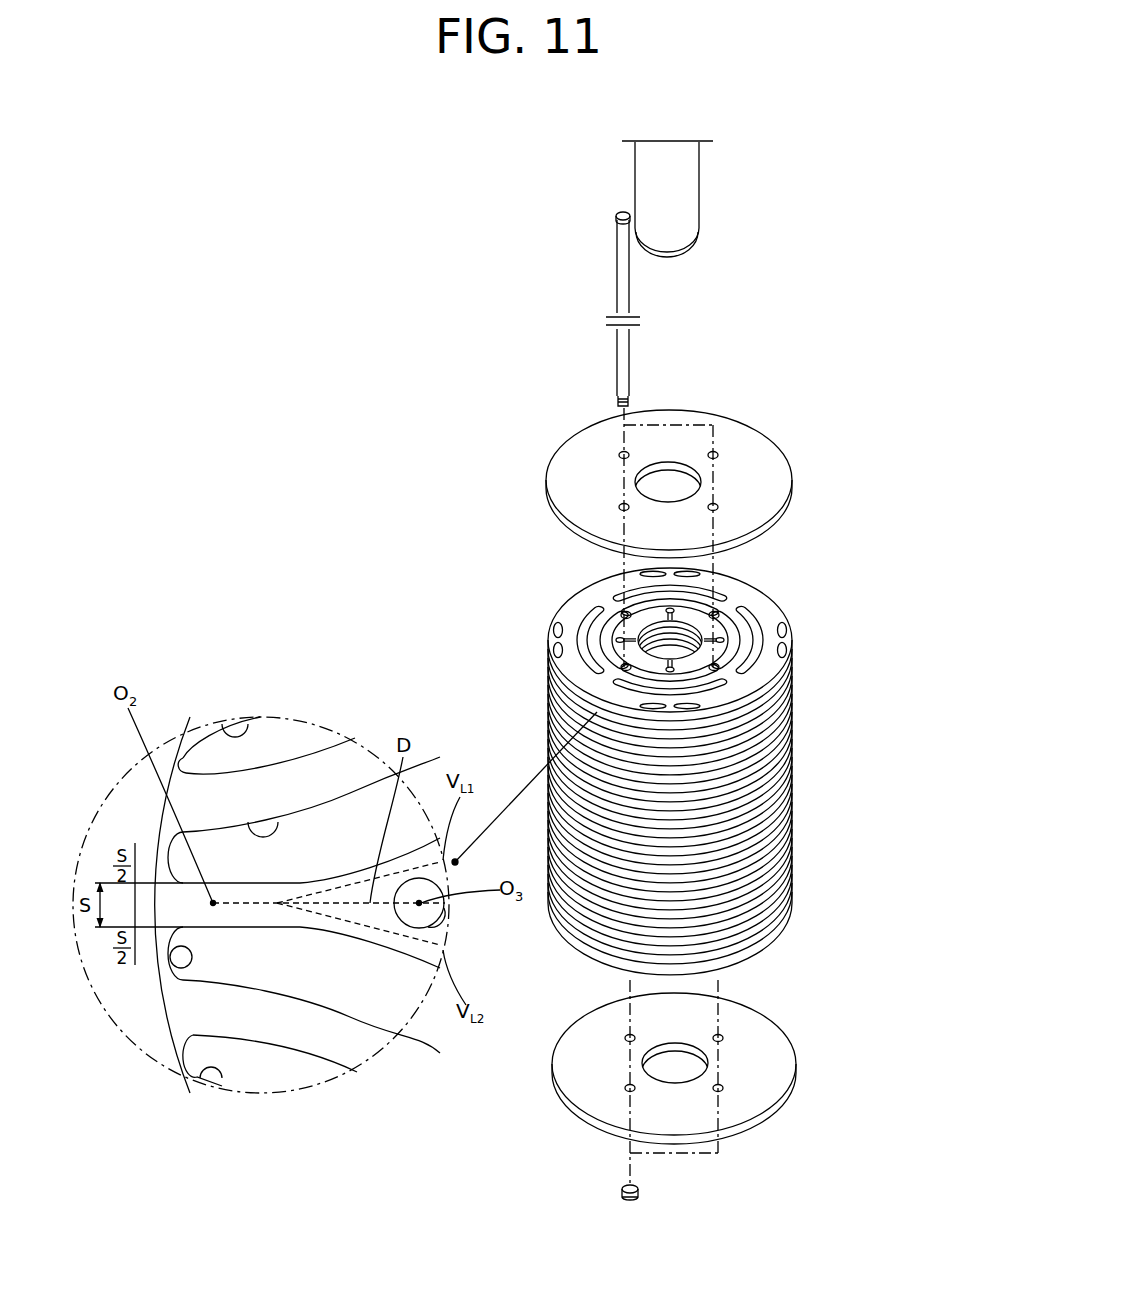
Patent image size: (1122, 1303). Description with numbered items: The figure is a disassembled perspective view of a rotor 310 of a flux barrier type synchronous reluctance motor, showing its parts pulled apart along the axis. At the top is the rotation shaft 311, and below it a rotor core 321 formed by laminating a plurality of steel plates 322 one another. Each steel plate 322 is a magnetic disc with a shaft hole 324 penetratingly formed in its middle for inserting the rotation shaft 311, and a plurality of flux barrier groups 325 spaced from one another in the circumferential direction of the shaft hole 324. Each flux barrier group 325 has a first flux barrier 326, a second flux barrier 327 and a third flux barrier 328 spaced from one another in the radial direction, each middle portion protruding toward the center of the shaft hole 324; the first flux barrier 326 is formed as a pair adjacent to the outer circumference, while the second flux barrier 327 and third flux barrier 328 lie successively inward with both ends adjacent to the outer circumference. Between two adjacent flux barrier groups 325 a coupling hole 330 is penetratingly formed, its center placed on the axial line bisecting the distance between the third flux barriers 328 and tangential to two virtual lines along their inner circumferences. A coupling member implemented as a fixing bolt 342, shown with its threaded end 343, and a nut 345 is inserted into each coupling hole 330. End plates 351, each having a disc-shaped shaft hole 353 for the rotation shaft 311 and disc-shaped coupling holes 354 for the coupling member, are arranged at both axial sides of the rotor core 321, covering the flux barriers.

The rotor 310 is at (470, 305).
The rotation shaft 311 is at (683, 174).
The rotor core 321 is at (520, 833).
The steel plate 322 is at (760, 693).
The shaft hole 324 is at (690, 628).
The flux barrier group 325 is at (448, 543).
The first flux barrier 326 is at (592, 628).
The second flux barrier 327 is at (598, 610).
The third flux barrier 328 is at (598, 598).
The coupling hole 330 is at (560, 664).
The fixing bolt 342 is at (617, 265).
The threaded portion 343 is at (617, 397).
The nut 345 is at (624, 1198).
The end plate 351 is at (782, 480).
The shaft hole 353 is at (672, 466).
The coupling hole 354 is at (619, 507).